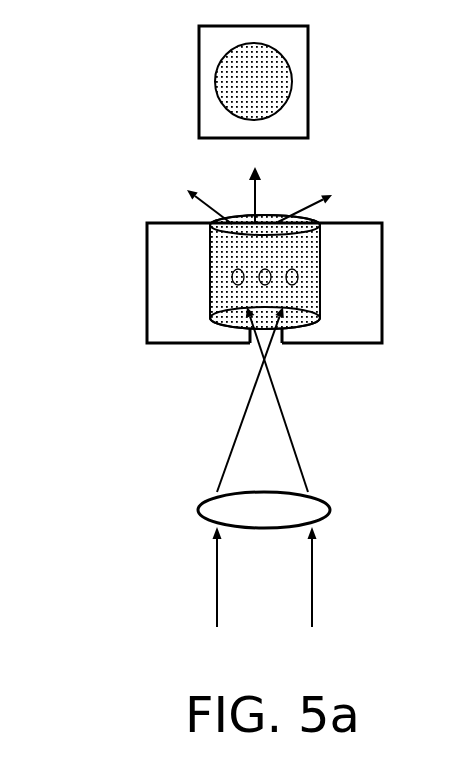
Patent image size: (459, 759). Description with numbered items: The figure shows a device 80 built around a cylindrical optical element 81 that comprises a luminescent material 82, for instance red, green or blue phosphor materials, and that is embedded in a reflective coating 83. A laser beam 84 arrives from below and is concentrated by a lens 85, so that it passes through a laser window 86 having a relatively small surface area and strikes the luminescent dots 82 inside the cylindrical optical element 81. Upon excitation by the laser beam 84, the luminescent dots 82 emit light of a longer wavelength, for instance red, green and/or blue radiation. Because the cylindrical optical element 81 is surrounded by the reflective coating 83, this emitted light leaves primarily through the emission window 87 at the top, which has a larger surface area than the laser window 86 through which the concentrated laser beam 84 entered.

The device 80 is at (106, 290).
The cylindrical optical element 81 is at (218, 259).
The luminescent material 82 is at (296, 274).
The reflective coating 83 is at (330, 345).
The laser beam 84 is at (312, 603).
The lens 85 is at (330, 510).
The laser window 86 is at (250, 345).
The emission window 87 is at (280, 220).